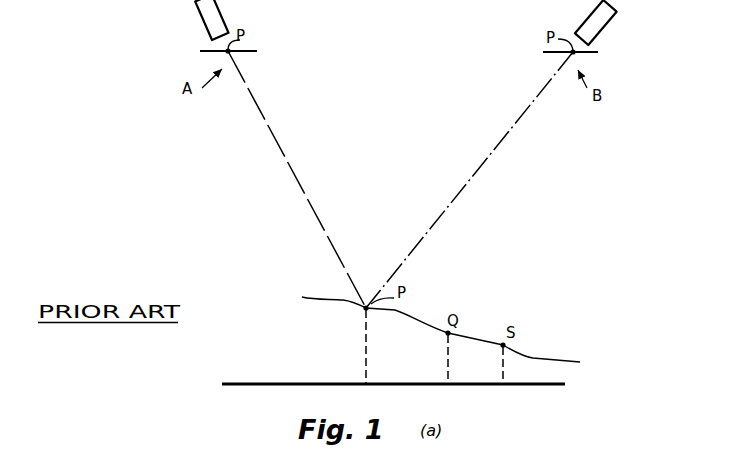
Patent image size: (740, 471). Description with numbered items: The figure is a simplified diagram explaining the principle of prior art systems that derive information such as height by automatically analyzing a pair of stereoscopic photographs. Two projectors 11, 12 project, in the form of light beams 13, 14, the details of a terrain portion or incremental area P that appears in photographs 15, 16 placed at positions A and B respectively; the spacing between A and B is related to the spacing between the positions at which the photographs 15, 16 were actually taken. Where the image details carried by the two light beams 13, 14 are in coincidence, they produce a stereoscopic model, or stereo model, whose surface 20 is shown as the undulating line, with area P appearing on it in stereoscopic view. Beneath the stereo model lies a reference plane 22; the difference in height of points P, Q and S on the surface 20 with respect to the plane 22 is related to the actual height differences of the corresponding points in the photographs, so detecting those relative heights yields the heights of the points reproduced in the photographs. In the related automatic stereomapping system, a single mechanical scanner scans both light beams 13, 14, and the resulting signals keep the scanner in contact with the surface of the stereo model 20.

The projector 11 is at (196, 14).
The projector 12 is at (616, 20).
The light beam 13 is at (292, 171).
The light beam 14 is at (494, 150).
The photograph 15 is at (257, 50).
The photograph 16 is at (598, 54).
The surface of stereoscopic model 20 is at (310, 283).
The reference plane 22 is at (284, 383).